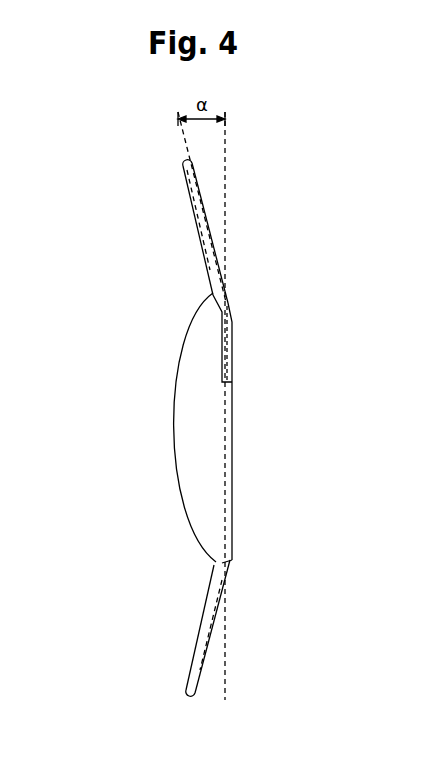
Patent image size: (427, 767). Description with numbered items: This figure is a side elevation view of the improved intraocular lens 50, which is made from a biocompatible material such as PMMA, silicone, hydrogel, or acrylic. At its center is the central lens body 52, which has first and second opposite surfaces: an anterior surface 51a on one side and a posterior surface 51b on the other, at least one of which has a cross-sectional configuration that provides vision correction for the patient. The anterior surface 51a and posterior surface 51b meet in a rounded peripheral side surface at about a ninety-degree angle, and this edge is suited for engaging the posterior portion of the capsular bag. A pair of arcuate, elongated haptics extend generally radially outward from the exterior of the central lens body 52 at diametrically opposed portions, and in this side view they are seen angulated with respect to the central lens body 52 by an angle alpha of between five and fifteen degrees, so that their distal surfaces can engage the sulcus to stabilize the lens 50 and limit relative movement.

The intraocular lens 50 is at (108, 322).
The anterior surface 51a is at (188, 345).
The posterior surface 51b is at (235, 323).
The central lens body 52 is at (200, 424).